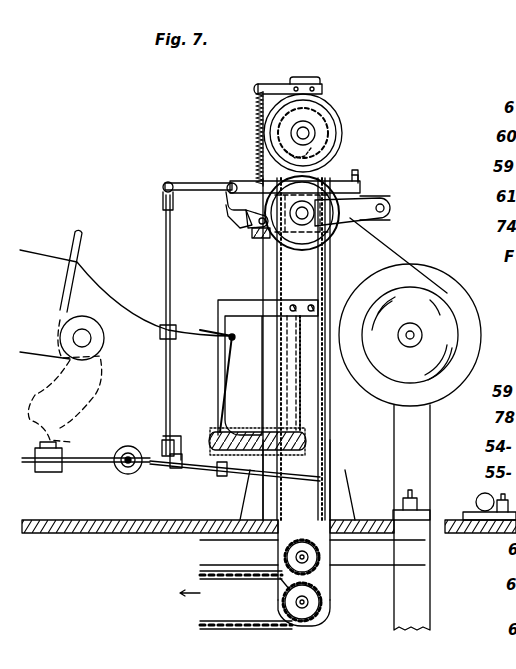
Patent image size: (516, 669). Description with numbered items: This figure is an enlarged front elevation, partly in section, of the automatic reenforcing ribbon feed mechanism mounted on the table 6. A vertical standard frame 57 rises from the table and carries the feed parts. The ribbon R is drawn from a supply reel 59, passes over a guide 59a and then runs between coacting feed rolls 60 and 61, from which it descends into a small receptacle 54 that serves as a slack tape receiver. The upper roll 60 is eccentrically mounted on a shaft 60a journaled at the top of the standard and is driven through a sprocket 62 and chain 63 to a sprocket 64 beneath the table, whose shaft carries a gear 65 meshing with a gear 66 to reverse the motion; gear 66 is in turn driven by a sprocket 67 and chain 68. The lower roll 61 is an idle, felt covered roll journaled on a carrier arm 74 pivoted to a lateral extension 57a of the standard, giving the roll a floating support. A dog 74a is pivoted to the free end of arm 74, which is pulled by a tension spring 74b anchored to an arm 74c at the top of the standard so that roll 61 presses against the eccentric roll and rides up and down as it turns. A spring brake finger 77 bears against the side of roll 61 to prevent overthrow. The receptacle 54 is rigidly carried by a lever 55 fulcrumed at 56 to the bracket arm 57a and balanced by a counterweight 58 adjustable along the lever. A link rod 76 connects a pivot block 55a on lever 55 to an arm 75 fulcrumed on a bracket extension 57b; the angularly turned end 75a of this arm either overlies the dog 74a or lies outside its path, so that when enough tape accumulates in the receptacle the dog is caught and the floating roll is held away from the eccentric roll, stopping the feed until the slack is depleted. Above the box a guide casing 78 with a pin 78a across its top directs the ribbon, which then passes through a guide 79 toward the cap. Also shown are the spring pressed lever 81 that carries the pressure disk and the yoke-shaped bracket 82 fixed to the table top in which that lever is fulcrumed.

The table 6 is at (95, 520).
The receptacle 54 is at (306, 433).
The lever 55 is at (240, 476).
The pivot block 55a is at (176, 470).
The fulcrum 56 is at (128, 474).
The standard frame 57 is at (310, 380).
The bracket arm 57a is at (392, 208).
The bracket extension 57b is at (242, 181).
The counterweight 58 is at (60, 450).
The supply reel 59 is at (455, 290).
The guide 59a is at (356, 178).
The feed roll 60 is at (342, 131).
The shaft 60a is at (312, 126).
The idle roll 61 is at (337, 236).
The sprocket 62 is at (312, 124).
The chain 63 is at (331, 278).
The sprocket 64 is at (454, 517).
The gear 65 is at (328, 570).
The gear 66 is at (332, 616).
The sprocket 67 is at (278, 596).
The chain 68 is at (208, 632).
The carrier arm 74 is at (360, 203).
The dog 74a is at (248, 222).
The tension spring 74b is at (257, 135).
The arm 74c is at (275, 80).
The arm 75 is at (172, 181).
The angularly turned end 75a is at (228, 205).
The link rod 76 is at (172, 290).
The spring brake finger 77 is at (258, 240).
The guide casing 78 is at (218, 374).
The pin 78a is at (226, 340).
The guide 79 is at (84, 244).
The spring pressed lever 81 is at (45, 318).
The yoke-shaped bracket 82 is at (85, 376).
The ribbon R is at (148, 312).